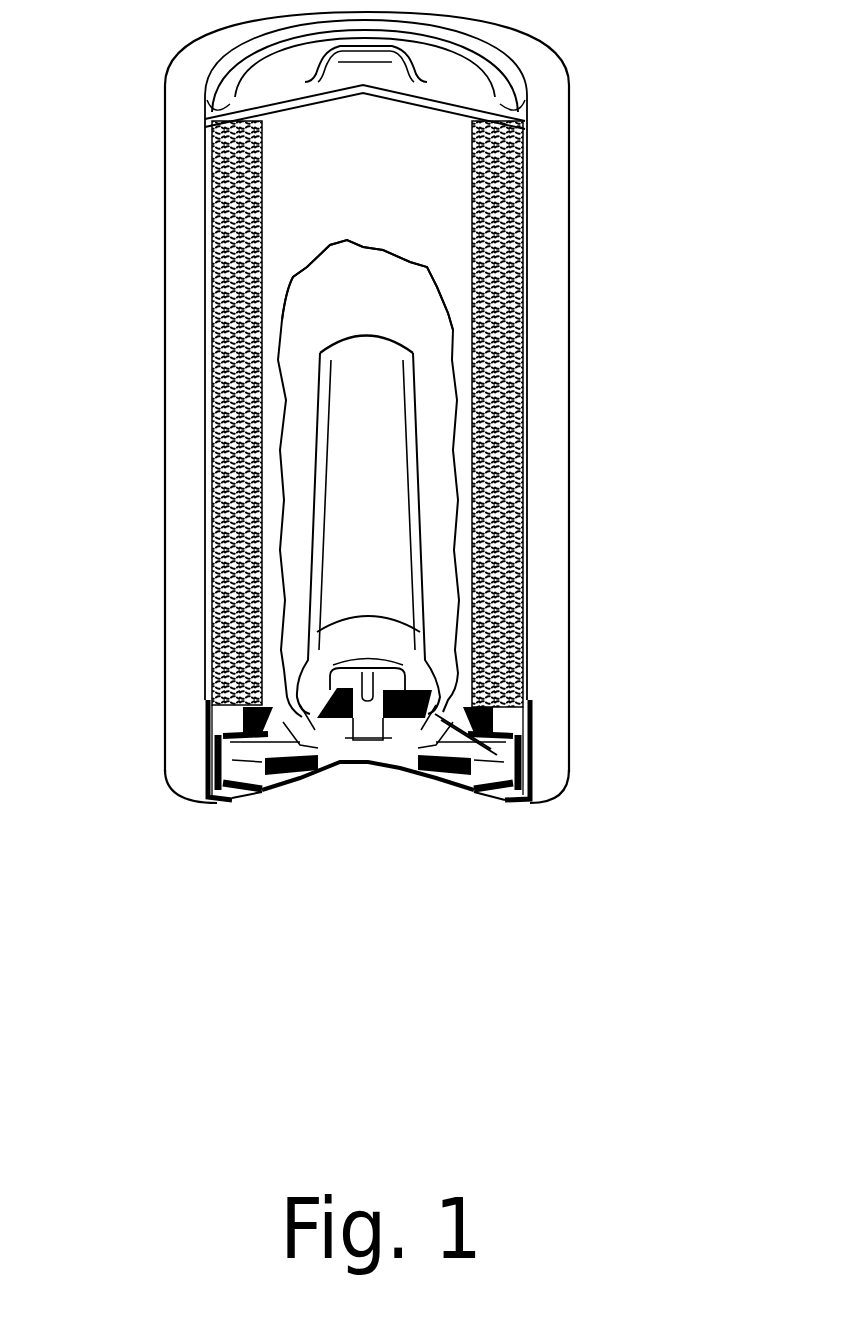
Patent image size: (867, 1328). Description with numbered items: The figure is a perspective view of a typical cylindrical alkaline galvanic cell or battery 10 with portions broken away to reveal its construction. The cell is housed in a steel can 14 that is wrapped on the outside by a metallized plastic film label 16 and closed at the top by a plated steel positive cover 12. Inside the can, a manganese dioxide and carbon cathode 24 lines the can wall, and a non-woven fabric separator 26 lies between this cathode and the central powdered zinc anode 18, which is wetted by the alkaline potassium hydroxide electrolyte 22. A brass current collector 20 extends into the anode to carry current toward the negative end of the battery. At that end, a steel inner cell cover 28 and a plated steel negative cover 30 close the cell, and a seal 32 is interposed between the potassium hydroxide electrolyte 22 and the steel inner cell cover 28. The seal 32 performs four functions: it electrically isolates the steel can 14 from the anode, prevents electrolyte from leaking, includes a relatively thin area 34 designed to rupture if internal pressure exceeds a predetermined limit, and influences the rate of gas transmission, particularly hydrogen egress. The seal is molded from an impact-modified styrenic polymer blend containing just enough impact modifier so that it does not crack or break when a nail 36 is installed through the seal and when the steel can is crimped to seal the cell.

The cylindrical alkaline galvanic cell 10 is at (641, 52).
The positive cover 12 is at (285, 63).
The steel can 14 is at (542, 144).
The metallized plastic film label 16 is at (550, 285).
The powdered zinc anode 18 is at (434, 430).
The brass current collector 20 is at (398, 583).
The potassium hydroxide electrolyte 22 is at (323, 300).
The manganese dioxide and carbon cathode 24 is at (221, 417).
The non-woven fabric separator 26 is at (261, 648).
The steel inner cell cover 28 is at (447, 787).
The negative cover 30 is at (419, 792).
The seal 32 is at (512, 721).
The thin area 34 is at (320, 767).
The nail 36 is at (370, 746).